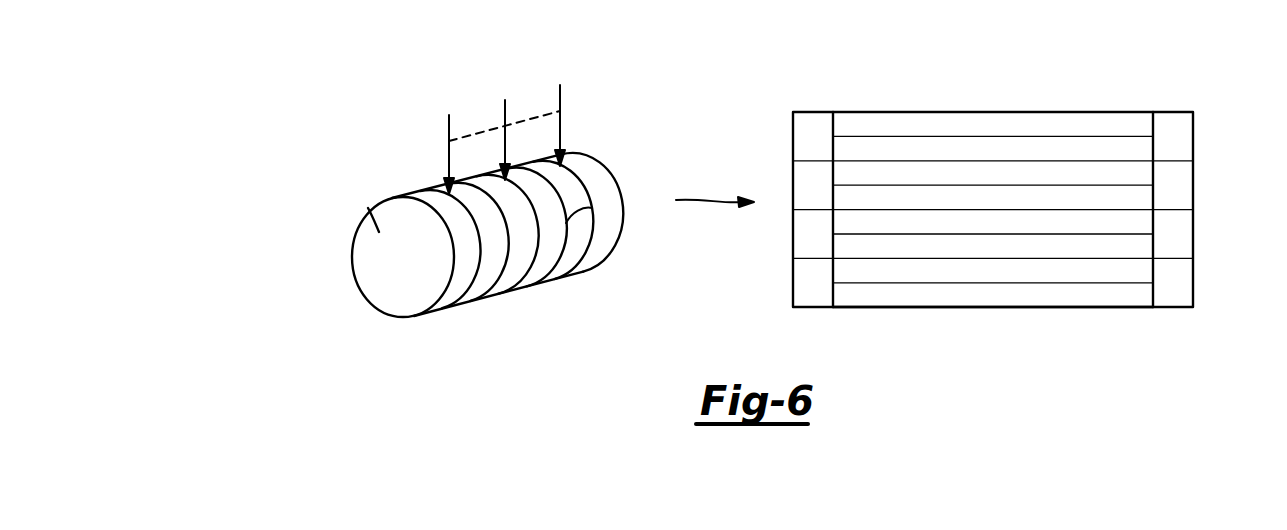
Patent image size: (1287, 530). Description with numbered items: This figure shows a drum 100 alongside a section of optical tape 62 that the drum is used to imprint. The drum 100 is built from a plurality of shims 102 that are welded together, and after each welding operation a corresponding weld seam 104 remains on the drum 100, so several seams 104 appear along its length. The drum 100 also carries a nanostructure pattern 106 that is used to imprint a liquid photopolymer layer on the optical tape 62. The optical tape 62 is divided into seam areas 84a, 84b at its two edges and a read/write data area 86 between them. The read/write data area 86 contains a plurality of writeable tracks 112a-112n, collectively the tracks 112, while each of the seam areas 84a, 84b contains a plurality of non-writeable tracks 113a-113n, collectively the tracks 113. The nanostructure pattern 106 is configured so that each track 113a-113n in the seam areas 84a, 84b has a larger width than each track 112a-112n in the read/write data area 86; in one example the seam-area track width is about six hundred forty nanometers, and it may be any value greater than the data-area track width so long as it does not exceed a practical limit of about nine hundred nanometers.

The drum 100 is at (637, 201).
The shims 102 is at (415, 196).
The seam 104 is at (372, 208).
The nanostructure pattern 106 is at (592, 208).
The optical tape 62 is at (1050, 112).
The seam area 84a is at (813, 308).
The seam area 84b is at (1173, 308).
The read/write data area 86 is at (1050, 308).
The plurality of writeable tracks 112 is at (949, 97).
The writeable track 112a is at (873, 124).
The writeable track 112n is at (873, 298).
The plurality of non-writeable tracks 113 is at (1169, 85).
The non-writeable track 113a is at (803, 138).
The non-writeable track 113n is at (803, 278).